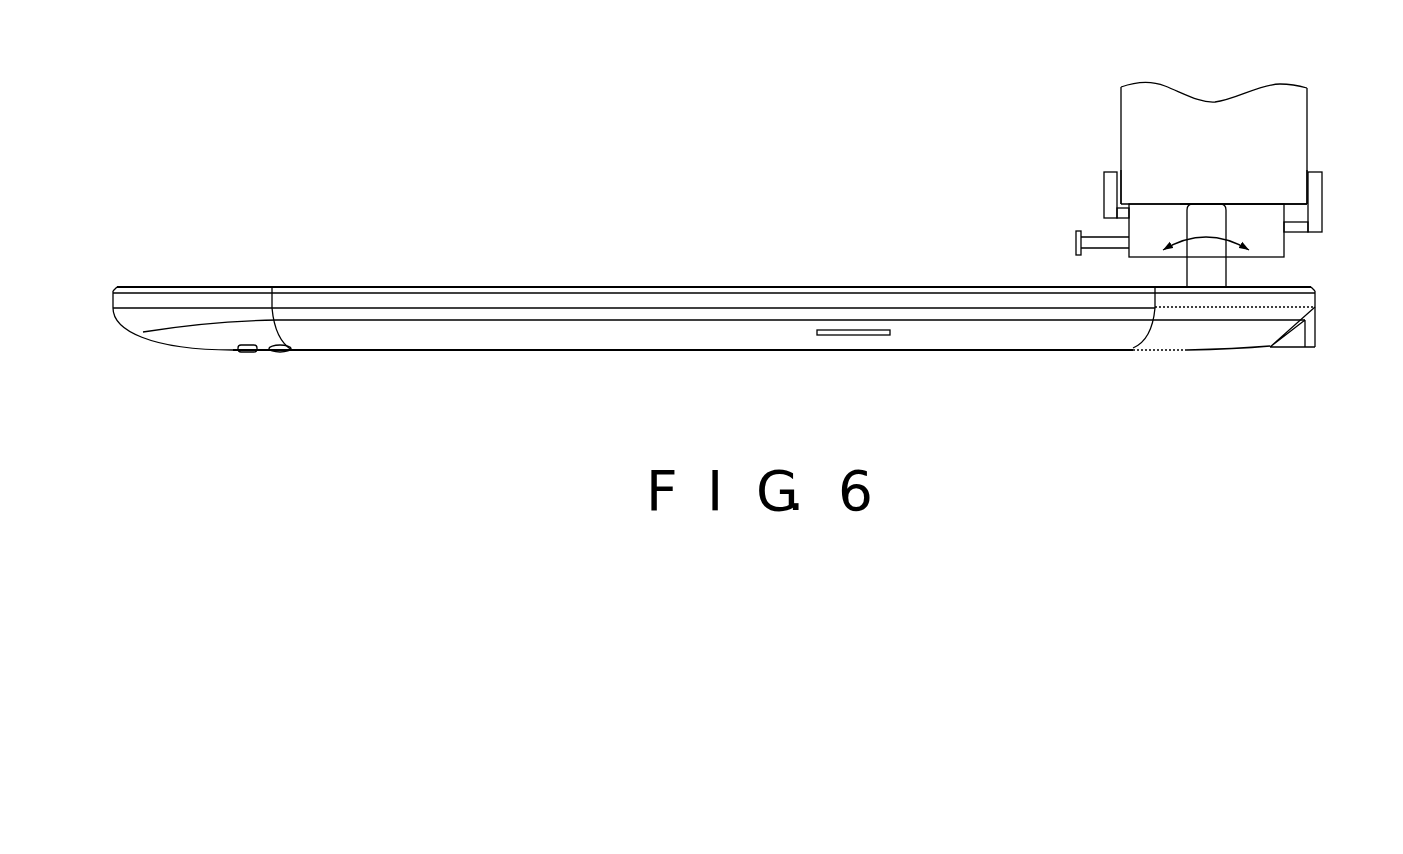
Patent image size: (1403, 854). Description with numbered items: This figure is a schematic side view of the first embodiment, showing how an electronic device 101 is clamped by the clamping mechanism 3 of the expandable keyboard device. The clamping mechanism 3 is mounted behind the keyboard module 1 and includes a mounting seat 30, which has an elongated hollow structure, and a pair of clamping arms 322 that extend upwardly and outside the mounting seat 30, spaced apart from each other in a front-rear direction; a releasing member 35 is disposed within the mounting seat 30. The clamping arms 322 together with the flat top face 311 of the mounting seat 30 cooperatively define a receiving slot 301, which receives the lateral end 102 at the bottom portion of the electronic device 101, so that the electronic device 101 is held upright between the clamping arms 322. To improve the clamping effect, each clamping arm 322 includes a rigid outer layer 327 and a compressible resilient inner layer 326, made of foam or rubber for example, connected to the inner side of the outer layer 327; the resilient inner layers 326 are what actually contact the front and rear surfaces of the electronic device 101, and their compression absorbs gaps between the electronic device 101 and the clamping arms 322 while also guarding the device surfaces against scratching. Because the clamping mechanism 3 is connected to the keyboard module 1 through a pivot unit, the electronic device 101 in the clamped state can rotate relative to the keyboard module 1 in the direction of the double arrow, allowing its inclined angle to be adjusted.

The keyboard module 1 is at (808, 272).
The clamping mechanism 3 is at (1198, 164).
The mounting seat 30 is at (1198, 196).
The releasing member 35 is at (1076, 245).
The electronic device 101 is at (1222, 122).
The lateral end 102 is at (1267, 204).
The receiving slot 301 is at (1163, 200).
The top face 311 is at (1235, 203).
The clamping arm 322 is at (1103, 197).
The resilient inner layer 326 is at (1305, 182).
The rigid outer layer 327 is at (1112, 215).